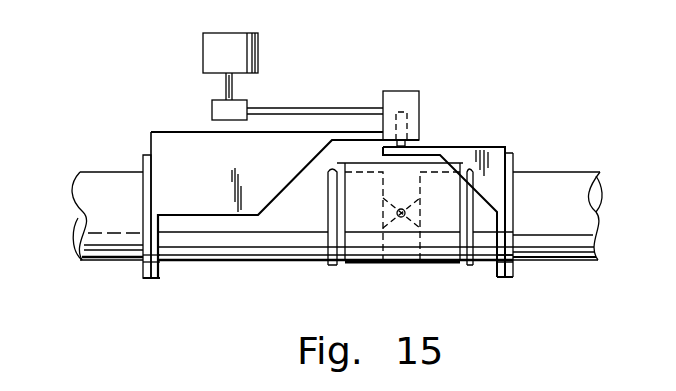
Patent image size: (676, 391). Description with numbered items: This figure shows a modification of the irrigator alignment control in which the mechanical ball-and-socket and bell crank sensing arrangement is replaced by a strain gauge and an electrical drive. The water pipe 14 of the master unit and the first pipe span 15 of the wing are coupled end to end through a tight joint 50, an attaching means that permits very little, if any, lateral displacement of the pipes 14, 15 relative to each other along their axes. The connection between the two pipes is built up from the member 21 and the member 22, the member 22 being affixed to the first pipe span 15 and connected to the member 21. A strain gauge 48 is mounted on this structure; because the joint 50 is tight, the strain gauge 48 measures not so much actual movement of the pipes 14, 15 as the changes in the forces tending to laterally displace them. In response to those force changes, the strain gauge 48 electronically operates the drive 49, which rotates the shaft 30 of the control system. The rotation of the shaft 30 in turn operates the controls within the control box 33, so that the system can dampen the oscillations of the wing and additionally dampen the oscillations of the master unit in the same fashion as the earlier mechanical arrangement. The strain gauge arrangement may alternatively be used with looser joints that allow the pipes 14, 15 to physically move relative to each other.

The water pipe 14 is at (85, 200).
The first pipe span 15 is at (583, 210).
The member 21 is at (282, 160).
The member 22 is at (465, 150).
The shaft 30 is at (227, 88).
The control box 33 is at (257, 43).
The strain gauge 48 is at (411, 98).
The drive 49 is at (238, 105).
The joint 50 is at (395, 272).